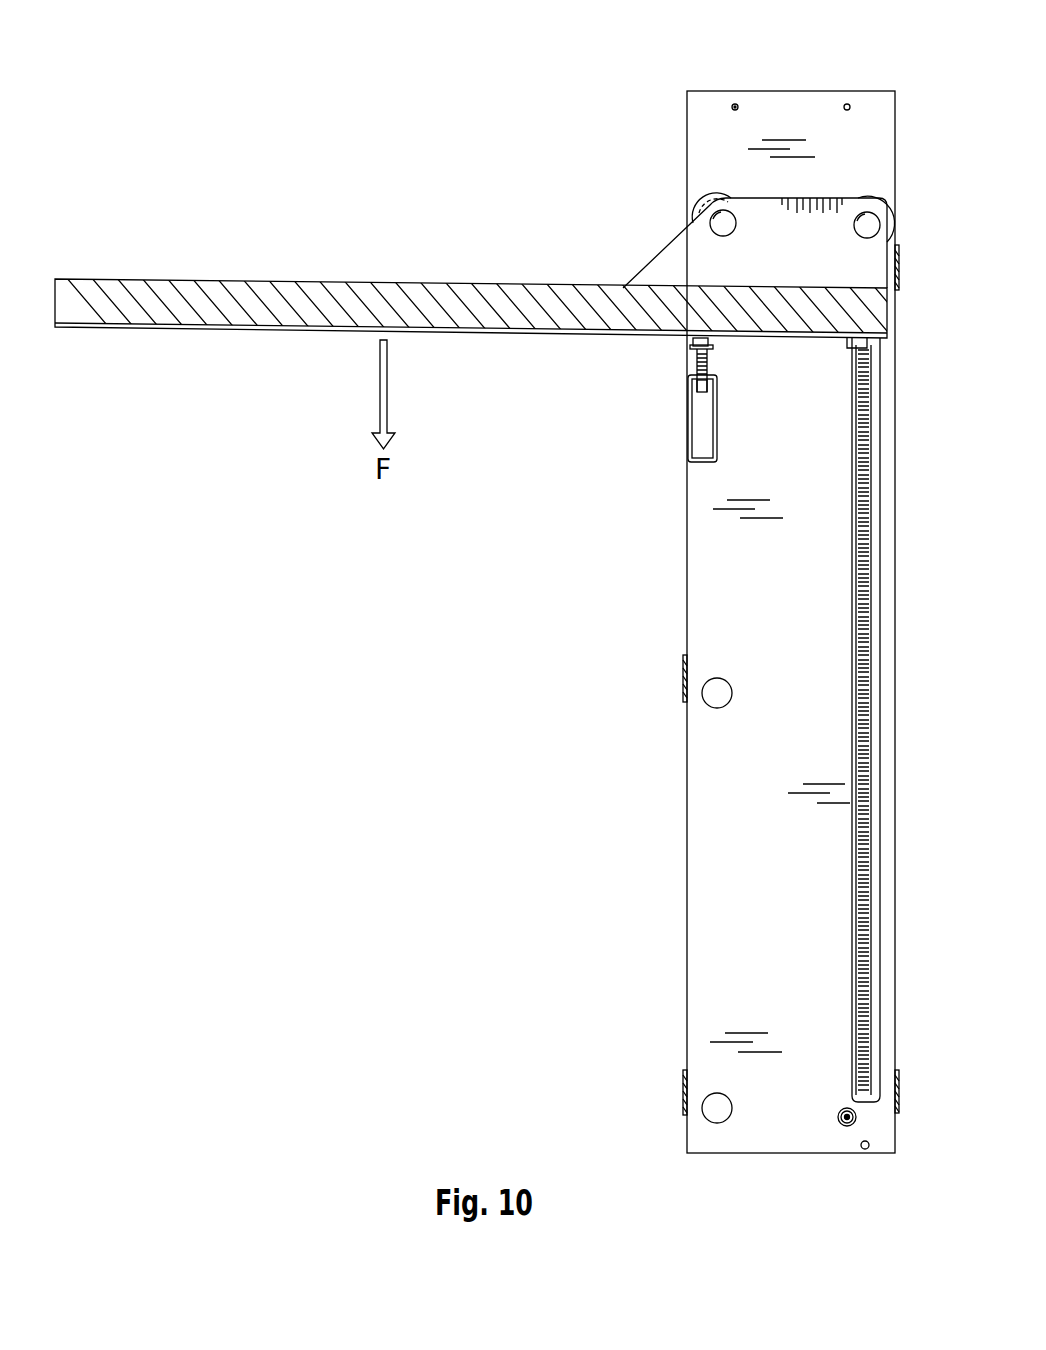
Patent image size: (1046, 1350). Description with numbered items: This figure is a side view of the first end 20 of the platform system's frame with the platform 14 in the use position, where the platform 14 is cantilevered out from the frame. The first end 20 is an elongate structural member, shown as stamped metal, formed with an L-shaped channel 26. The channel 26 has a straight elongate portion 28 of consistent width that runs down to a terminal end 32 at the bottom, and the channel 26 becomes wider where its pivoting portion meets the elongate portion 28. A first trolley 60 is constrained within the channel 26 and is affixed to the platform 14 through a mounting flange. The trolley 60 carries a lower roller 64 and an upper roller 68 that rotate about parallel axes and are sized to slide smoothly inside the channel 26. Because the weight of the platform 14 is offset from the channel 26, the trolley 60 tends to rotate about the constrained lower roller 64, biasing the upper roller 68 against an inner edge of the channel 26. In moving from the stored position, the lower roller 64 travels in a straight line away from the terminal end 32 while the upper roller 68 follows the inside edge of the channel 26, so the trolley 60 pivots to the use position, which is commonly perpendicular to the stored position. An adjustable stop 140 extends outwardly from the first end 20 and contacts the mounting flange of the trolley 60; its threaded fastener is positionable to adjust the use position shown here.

The platform 14 is at (390, 282).
The first end 20 is at (792, 120).
The channel 26 is at (888, 535).
The elongate portion 28 is at (847, 858).
The terminal end 32 is at (862, 1101).
The first trolley 60 is at (697, 262).
The lower roller 64 is at (876, 196).
The upper roller 68 is at (705, 202).
The adjustable stop 140 is at (688, 415).